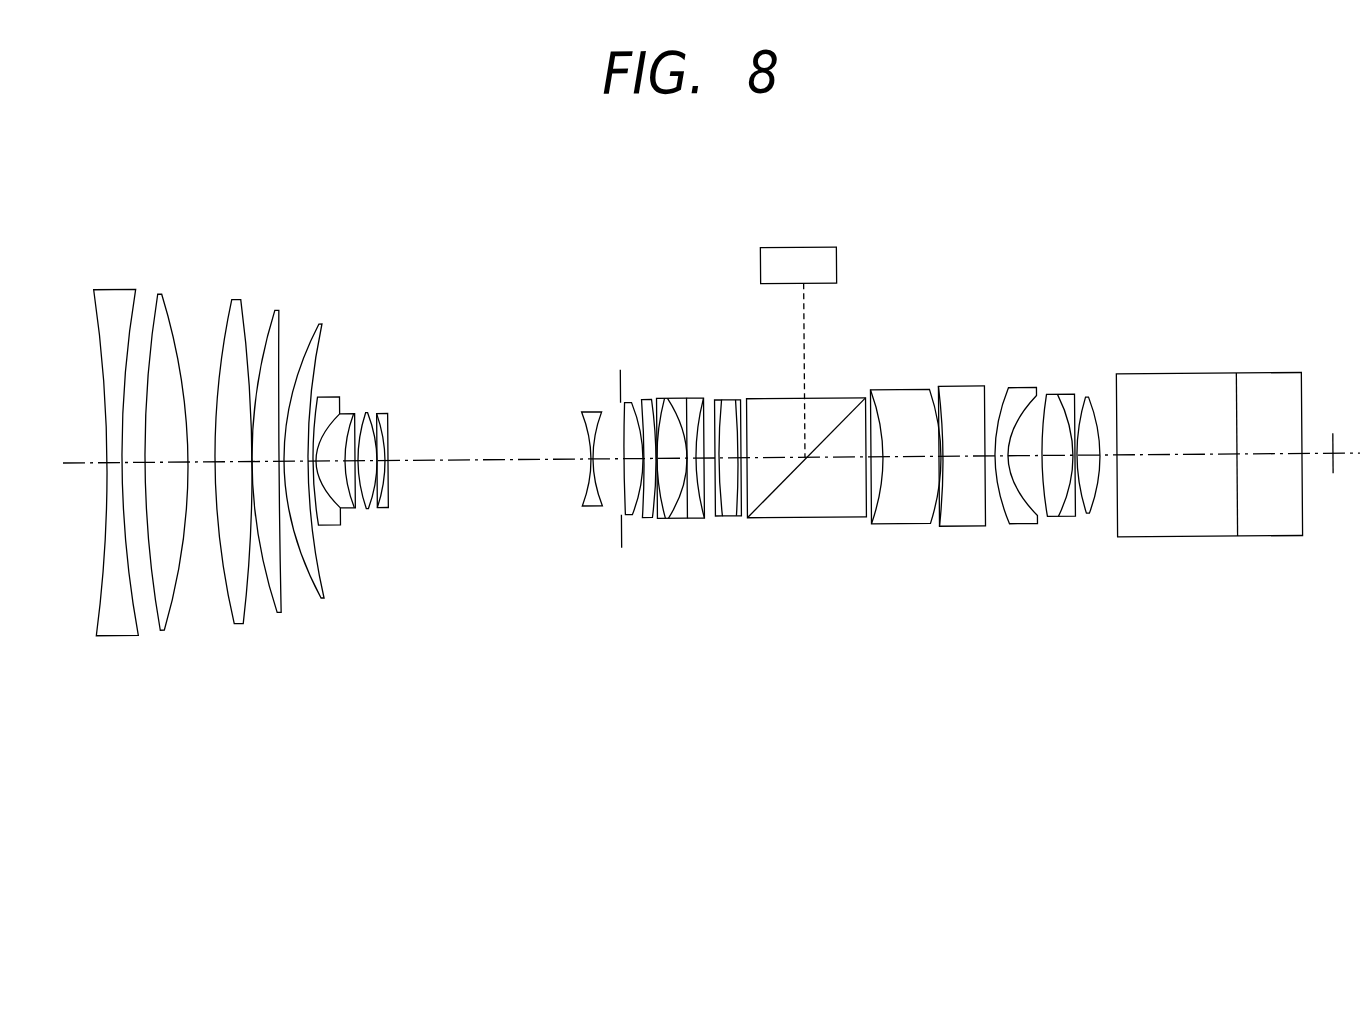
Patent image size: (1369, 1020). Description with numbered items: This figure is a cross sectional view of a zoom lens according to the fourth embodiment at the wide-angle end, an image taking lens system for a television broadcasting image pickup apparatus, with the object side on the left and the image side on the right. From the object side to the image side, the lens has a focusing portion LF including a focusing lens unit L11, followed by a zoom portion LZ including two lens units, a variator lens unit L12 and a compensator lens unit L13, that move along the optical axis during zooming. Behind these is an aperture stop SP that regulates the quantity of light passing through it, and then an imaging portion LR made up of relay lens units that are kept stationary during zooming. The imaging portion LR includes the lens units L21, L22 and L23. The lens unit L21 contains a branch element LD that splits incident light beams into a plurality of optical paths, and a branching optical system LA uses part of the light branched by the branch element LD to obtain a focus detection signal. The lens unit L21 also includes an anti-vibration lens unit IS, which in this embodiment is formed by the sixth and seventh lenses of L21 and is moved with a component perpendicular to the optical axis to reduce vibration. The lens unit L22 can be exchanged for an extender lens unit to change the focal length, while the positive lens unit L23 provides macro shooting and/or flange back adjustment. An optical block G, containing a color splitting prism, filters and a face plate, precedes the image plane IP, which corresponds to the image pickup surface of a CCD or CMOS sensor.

The focusing portion LF is at (342, 203).
The focusing lens unit L11 is at (333, 256).
The variator lens unit L12 is at (390, 390).
The zoom portion LZ is at (612, 325).
The compensator lens unit L13 is at (603, 394).
The aperture stop SP is at (622, 375).
The imaging portion LR is at (1100, 329).
The lens unit L21 is at (853, 583).
The anti-vibration lens unit IS is at (752, 397).
The branch element LD is at (822, 413).
The branching optical system LA is at (799, 352).
The lens unit L22 is at (987, 583).
The lens unit L23 is at (1098, 583).
The optical block G is at (1182, 394).
The image plane IP is at (1333, 443).